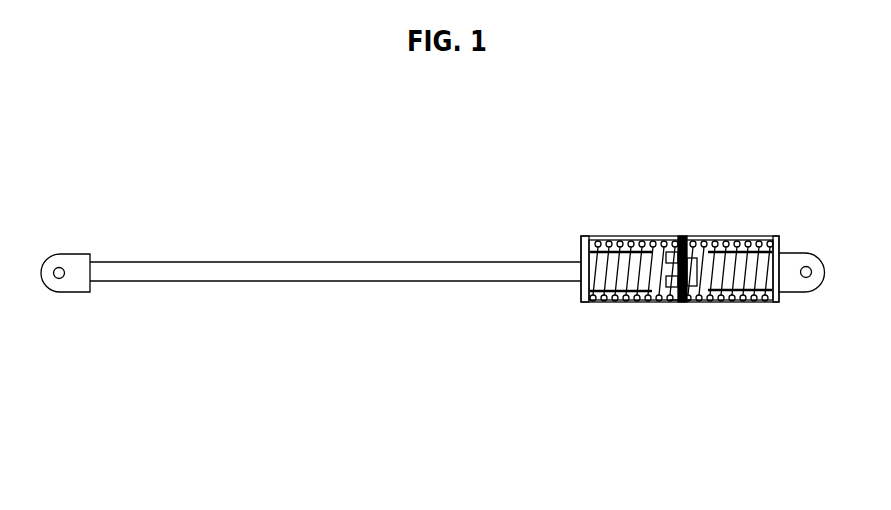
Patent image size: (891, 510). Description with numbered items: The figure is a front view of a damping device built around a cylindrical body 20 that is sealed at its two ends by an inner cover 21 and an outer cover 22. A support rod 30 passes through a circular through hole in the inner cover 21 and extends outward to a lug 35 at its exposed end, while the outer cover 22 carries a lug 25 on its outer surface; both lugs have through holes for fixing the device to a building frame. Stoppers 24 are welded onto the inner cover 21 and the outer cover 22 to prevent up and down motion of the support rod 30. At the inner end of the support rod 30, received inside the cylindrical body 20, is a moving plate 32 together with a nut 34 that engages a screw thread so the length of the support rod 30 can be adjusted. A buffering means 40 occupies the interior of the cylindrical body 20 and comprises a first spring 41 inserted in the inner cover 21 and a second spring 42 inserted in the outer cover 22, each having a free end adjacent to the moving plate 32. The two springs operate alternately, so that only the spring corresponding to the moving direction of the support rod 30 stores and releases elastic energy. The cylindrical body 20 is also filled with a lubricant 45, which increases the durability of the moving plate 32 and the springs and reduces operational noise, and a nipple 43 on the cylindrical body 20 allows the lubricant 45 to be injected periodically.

The cylindrical body 20 is at (610, 238).
The inner cover 21 is at (581, 237).
The outer cover 22 is at (778, 237).
The stoppers 24 is at (747, 238).
The lug 25 is at (808, 257).
The support rod 30 is at (313, 275).
The moving plate 32 is at (678, 237).
The nut 34 is at (702, 238).
The lug 35 is at (77, 259).
The buffering means 40 is at (670, 276).
The first spring 41 is at (615, 300).
The second spring 42 is at (732, 299).
The nipple 43 is at (682, 237).
The lubricant 45 is at (675, 329).